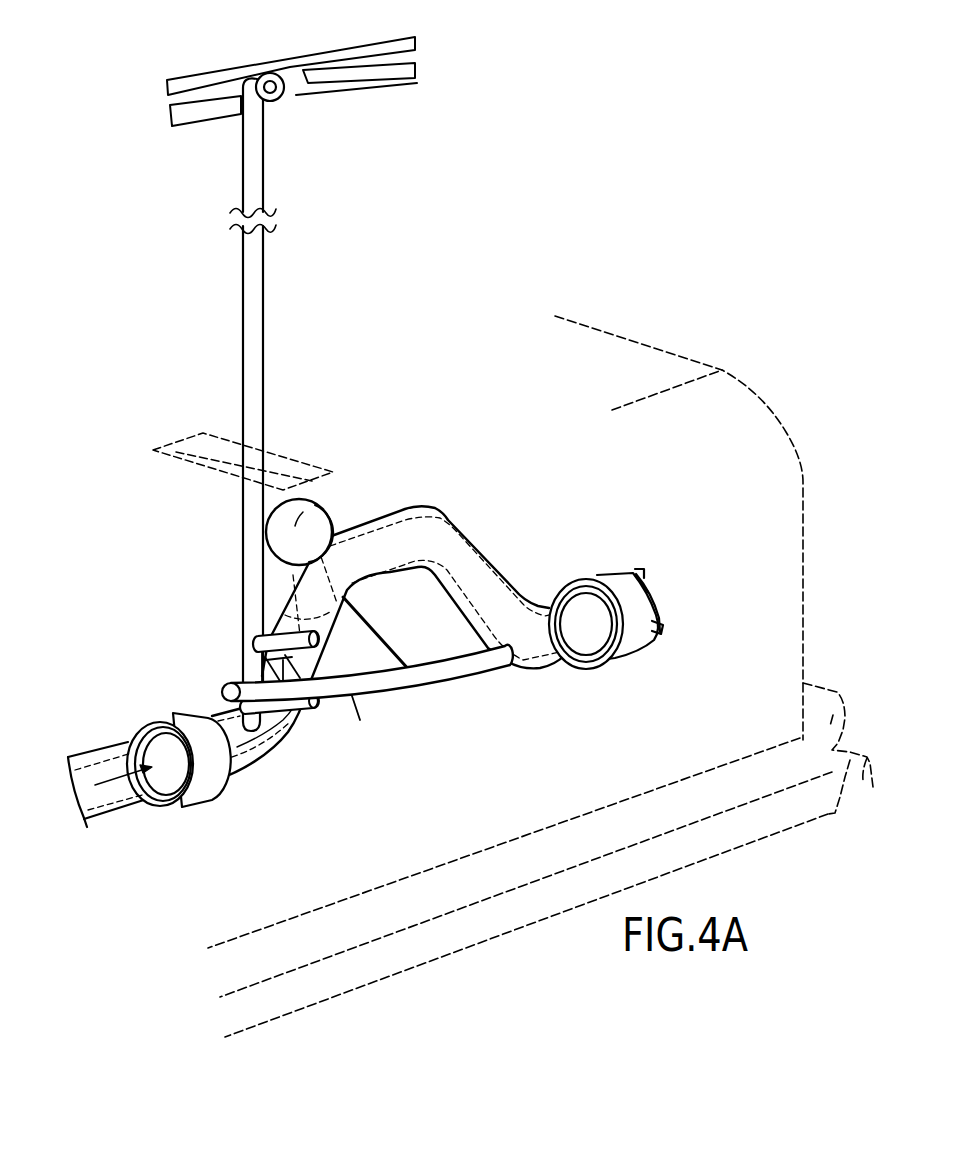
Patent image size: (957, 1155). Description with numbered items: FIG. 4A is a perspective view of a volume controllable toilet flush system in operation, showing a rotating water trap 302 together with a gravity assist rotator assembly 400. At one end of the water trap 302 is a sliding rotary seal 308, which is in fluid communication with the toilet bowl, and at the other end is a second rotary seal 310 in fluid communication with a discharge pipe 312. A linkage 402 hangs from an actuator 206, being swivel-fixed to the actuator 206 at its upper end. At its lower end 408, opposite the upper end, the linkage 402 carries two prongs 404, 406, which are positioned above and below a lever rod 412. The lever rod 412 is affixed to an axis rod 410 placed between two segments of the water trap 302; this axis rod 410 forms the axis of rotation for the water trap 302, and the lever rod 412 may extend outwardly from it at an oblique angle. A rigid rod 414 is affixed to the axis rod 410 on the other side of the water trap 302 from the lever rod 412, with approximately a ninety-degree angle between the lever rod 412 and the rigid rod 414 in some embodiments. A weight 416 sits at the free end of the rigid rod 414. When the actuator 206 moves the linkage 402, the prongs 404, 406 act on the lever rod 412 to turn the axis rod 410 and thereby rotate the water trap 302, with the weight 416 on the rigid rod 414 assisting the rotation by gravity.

The actuator 206 is at (333, 60).
The water trap 302 is at (410, 545).
The sliding rotary seal 308 is at (170, 718).
The second rotary seal 310 is at (605, 593).
The discharge pipe 312 is at (646, 588).
The gravity assist rotator assembly 400 is at (437, 734).
The linkage 402 is at (262, 362).
The prong 404 is at (272, 638).
The prong 406 is at (303, 708).
The lower end 408 is at (235, 670).
The axis rod 410 is at (465, 666).
The lever rod 412 is at (348, 690).
The rigid rod 414 is at (362, 623).
The weight 416 is at (310, 503).